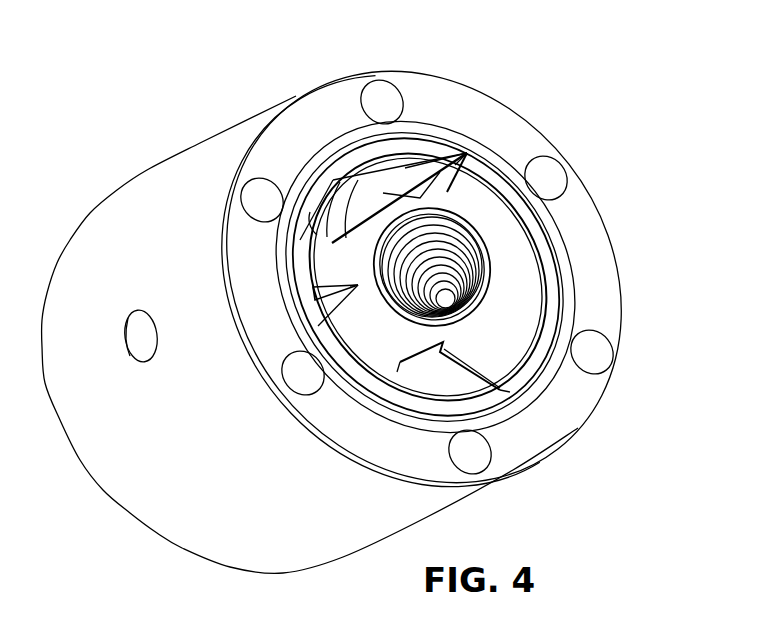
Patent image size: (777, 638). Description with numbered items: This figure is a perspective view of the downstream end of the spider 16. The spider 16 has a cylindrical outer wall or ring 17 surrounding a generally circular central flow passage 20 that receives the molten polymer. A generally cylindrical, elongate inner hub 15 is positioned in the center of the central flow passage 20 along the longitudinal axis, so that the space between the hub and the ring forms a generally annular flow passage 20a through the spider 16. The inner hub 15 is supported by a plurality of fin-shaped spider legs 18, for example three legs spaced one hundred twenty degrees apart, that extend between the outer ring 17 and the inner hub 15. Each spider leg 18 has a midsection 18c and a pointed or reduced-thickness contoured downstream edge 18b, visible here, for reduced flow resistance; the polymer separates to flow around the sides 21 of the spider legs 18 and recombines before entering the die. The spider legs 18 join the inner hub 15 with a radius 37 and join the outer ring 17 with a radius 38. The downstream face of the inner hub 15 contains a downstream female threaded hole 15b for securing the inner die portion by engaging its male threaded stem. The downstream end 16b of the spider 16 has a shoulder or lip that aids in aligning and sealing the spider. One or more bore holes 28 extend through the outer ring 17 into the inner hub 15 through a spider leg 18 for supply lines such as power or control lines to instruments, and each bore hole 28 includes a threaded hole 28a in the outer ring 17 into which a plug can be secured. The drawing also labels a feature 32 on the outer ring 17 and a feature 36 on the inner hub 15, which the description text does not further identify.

The spider 16 is at (150, 138).
The outer ring 17 is at (485, 96).
The bolt hole 32 is at (540, 166).
The central flow passage 20 is at (552, 282).
The downstream end 16b is at (562, 252).
The annular flow passage 20a is at (557, 310).
The inner hub 15 is at (575, 220).
The central boss 36 is at (490, 268).
The downstream female threaded hole 15b is at (462, 298).
The spider legs 18 is at (447, 183).
The downstream edge 18b is at (405, 198).
The midsection 18c is at (325, 205).
The sides 21 is at (367, 205).
The radius 37 is at (397, 372).
The radius 38 is at (405, 168).
The bore holes 28 is at (140, 333).
The threaded hole 28a is at (131, 358).